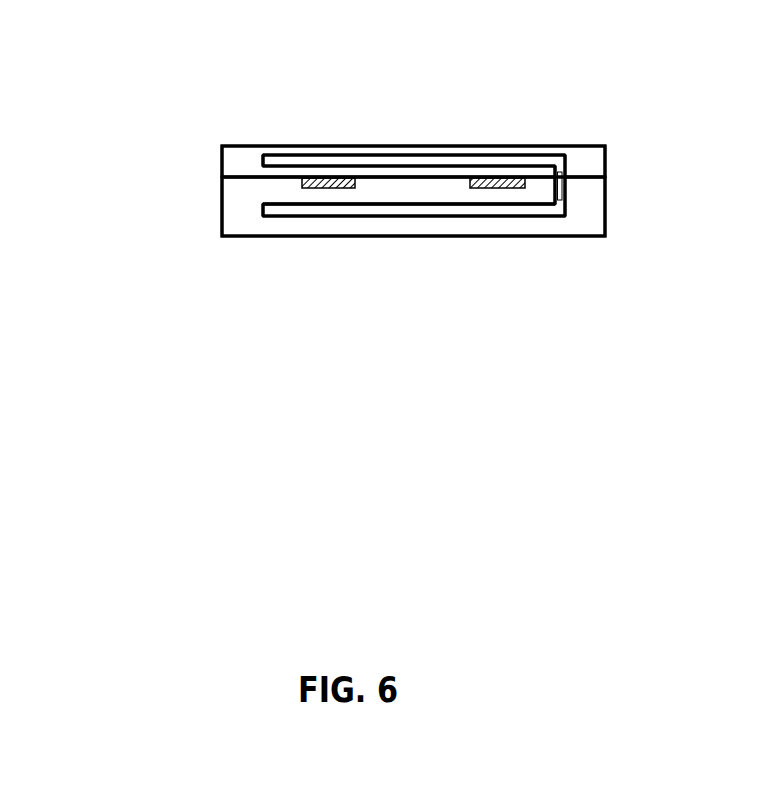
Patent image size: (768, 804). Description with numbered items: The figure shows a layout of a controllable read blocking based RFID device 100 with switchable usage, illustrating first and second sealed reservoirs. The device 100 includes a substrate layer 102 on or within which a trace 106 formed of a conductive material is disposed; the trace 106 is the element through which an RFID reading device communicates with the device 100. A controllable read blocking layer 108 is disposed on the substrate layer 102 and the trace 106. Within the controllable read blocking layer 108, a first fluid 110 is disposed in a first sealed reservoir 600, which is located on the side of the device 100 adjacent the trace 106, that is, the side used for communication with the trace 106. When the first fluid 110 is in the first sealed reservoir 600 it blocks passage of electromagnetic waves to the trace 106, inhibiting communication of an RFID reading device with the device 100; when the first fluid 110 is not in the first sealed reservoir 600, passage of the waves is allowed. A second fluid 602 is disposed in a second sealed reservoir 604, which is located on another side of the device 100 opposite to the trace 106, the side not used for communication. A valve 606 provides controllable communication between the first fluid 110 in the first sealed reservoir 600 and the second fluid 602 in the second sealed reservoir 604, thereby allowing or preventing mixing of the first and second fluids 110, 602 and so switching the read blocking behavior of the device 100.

The device 100 is at (392, 260).
The substrate layer 102 is at (223, 233).
The trace 106 is at (300, 184).
The controllable read blocking layer 108 is at (223, 163).
The first fluid 110 is at (435, 157).
The first sealed reservoir 600 is at (343, 156).
The second fluid 602 is at (527, 210).
The second sealed reservoir 604 is at (430, 215).
The valve 606 is at (565, 186).